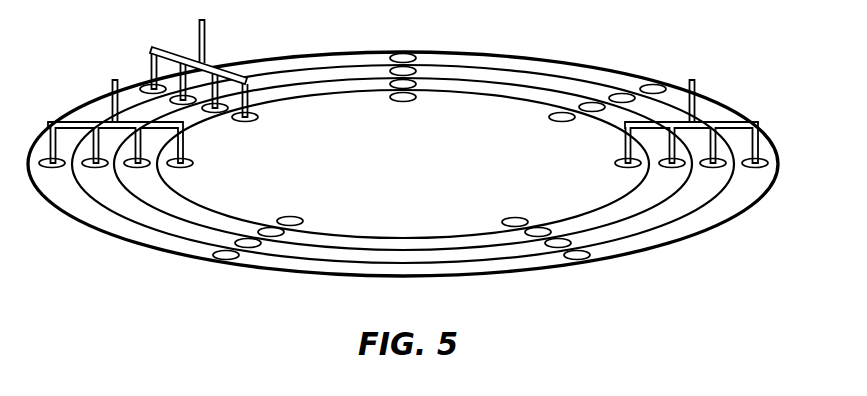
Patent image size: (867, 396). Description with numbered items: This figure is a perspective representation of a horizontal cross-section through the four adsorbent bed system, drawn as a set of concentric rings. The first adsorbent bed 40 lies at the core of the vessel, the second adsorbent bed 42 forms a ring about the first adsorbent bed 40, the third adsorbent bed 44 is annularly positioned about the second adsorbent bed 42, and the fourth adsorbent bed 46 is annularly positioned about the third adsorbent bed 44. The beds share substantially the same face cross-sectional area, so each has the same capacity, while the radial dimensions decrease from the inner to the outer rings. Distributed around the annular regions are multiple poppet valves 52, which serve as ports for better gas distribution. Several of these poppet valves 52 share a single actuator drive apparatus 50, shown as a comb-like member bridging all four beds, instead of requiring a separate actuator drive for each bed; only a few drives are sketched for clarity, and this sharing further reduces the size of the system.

The first adsorbent bed 40 is at (520, 113).
The second adsorbent bed 42 is at (497, 88).
The third adsorbent bed 44 is at (465, 73).
The fourth adsorbent bed 46 is at (430, 58).
The actuator drive apparatus 50 is at (112, 82).
The poppet valves 52 is at (720, 153).